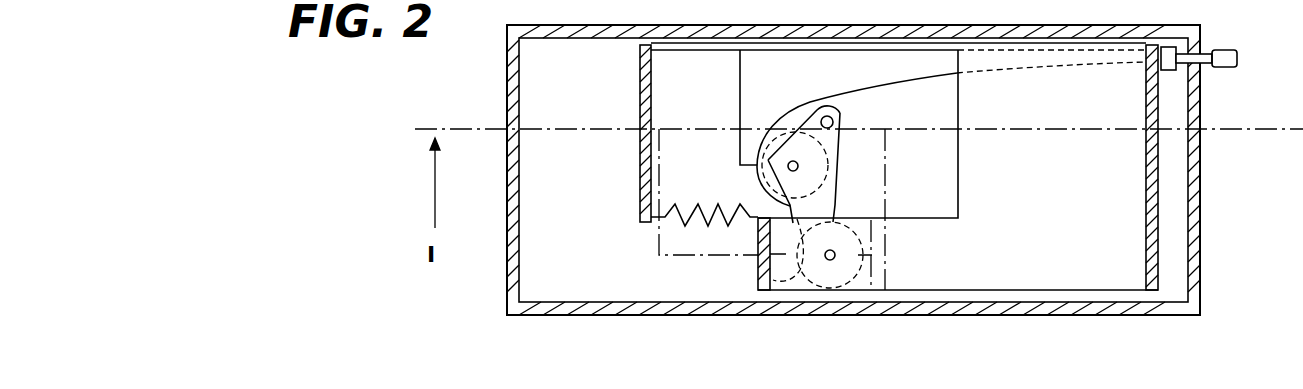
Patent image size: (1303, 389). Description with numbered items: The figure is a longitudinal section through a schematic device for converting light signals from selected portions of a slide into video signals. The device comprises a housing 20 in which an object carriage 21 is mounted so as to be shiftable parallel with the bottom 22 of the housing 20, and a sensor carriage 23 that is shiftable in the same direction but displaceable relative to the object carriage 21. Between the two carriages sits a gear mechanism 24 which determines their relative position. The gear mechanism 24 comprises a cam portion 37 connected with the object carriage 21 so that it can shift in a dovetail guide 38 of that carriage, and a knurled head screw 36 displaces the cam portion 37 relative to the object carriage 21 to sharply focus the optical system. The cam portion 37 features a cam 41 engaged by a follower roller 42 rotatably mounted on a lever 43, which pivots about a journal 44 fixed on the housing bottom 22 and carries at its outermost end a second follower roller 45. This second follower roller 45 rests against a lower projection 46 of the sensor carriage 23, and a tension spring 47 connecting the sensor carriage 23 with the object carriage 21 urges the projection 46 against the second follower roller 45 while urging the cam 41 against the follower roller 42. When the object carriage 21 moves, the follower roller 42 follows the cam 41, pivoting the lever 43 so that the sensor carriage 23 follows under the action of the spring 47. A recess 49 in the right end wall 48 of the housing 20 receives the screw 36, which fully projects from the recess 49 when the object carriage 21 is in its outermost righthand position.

The housing 20 is at (1202, 213).
The object carriage 21 is at (640, 92).
The bottom of the housing 22 is at (583, 190).
The sensor carriage 23 is at (1067, 216).
The gear mechanism 24 is at (826, 162).
The knurled head screw 36 is at (1237, 64).
The cam portion 37 is at (897, 75).
The dovetail guide 38 is at (770, 48).
The cam 41 is at (958, 90).
The follower roller 42 is at (763, 190).
The lever 43 is at (835, 208).
The journal 44 is at (893, 150).
The second follower roller 45 is at (758, 270).
The lower projection 46 is at (835, 209).
The tension spring 47 is at (692, 215).
The right end wall 48 is at (1200, 183).
The recess 49 is at (1198, 48).